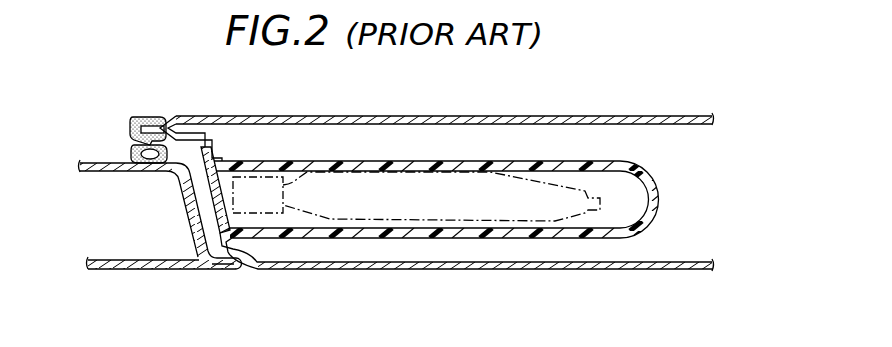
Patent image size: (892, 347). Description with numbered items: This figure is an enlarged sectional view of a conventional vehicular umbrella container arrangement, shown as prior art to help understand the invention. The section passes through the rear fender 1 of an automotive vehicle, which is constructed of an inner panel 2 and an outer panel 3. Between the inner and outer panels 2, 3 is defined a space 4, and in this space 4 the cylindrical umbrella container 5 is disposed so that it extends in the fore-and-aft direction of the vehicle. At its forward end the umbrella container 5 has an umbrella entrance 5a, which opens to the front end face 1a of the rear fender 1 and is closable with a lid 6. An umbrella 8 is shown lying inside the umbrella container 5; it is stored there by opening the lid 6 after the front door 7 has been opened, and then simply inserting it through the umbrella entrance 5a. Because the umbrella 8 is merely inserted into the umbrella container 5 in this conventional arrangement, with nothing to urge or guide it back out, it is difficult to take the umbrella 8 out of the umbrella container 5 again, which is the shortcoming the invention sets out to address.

The rear fender 1 is at (508, 270).
The front end face 1a is at (194, 130).
The inner panel 2 is at (562, 115).
The outer panel 3 is at (631, 271).
The space 4 is at (688, 160).
The umbrella container 5 is at (660, 197).
The umbrella entrance 5a is at (214, 176).
The lid 6 is at (207, 192).
The front door 7 is at (153, 270).
The umbrella 8 is at (356, 222).